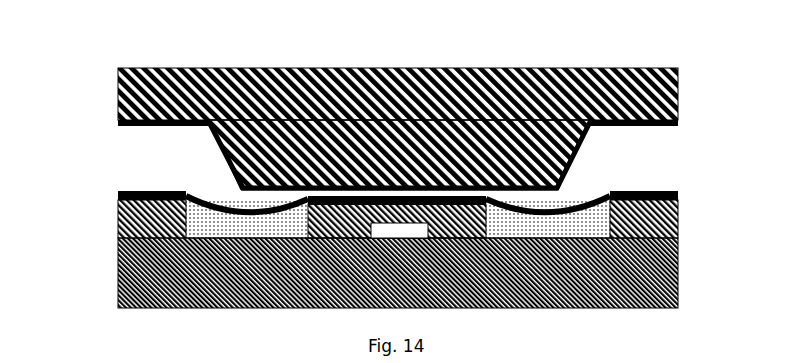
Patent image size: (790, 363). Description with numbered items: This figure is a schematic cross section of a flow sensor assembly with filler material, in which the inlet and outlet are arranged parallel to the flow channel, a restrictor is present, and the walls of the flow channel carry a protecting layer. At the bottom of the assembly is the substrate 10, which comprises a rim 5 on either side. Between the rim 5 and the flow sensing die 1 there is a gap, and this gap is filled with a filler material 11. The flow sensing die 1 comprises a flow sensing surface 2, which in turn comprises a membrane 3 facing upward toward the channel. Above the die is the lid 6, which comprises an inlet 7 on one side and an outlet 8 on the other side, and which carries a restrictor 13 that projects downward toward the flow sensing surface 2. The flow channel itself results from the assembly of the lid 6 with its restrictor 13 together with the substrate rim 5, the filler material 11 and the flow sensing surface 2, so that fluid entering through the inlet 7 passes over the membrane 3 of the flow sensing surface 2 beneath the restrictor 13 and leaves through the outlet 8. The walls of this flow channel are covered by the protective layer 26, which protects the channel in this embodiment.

The flow sensing die 1 is at (322, 215).
The flow sensing surface 2 is at (335, 188).
The membrane 3 is at (398, 188).
The rim 5 is at (128, 210).
The lid 6 is at (125, 78).
The inlet 7 is at (135, 147).
The outlet 8 is at (637, 152).
The substrate 10 is at (600, 290).
The filler material 11 is at (200, 218).
The restrictor 13 is at (500, 140).
The protective layer 26 is at (672, 190).